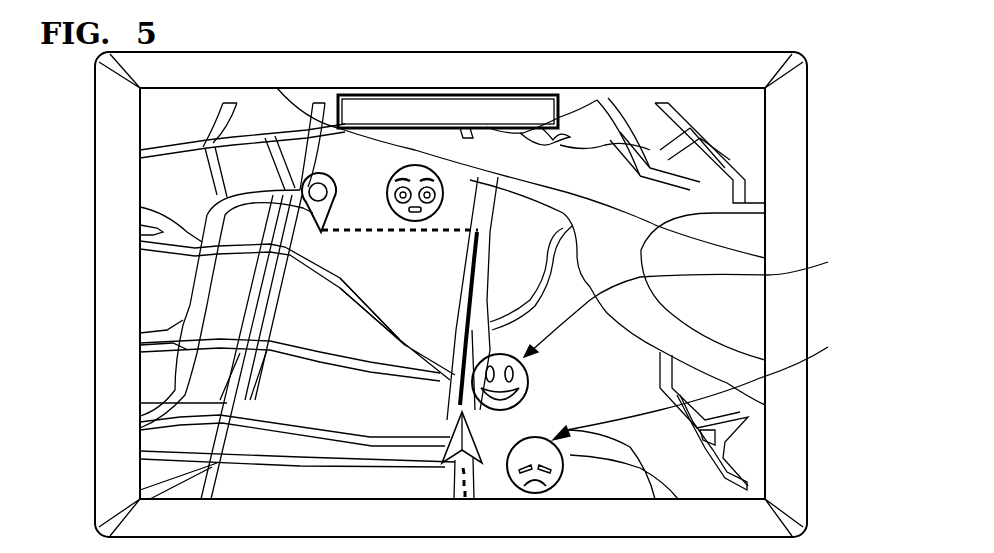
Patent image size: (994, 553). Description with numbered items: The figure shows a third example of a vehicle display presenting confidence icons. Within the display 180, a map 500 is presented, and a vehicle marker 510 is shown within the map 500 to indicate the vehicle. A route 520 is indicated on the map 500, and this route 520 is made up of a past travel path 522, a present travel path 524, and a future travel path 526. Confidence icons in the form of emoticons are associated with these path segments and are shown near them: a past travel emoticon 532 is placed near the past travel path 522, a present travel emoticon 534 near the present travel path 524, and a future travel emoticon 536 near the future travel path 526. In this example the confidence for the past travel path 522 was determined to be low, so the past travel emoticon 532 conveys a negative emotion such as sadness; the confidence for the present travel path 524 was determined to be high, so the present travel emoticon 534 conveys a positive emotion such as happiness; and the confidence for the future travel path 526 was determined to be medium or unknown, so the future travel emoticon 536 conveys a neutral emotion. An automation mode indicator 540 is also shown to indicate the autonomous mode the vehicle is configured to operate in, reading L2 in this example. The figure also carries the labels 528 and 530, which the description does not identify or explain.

The display 180 is at (666, 43).
The map 500 is at (746, 180).
The vehicle marker 510 is at (448, 422).
The route 520 is at (468, 294).
The past travel path 522 is at (452, 478).
The present travel path 524 is at (440, 352).
The future travel path 526 is at (420, 240).
The destination marker 528 is at (302, 197).
The indicator arrow 530 is at (693, 344).
The past travel emoticon 532 is at (549, 443).
The present travel emoticon 534 is at (527, 377).
The future travel emoticon 536 is at (386, 190).
The automation mode indicator 540 is at (558, 112).